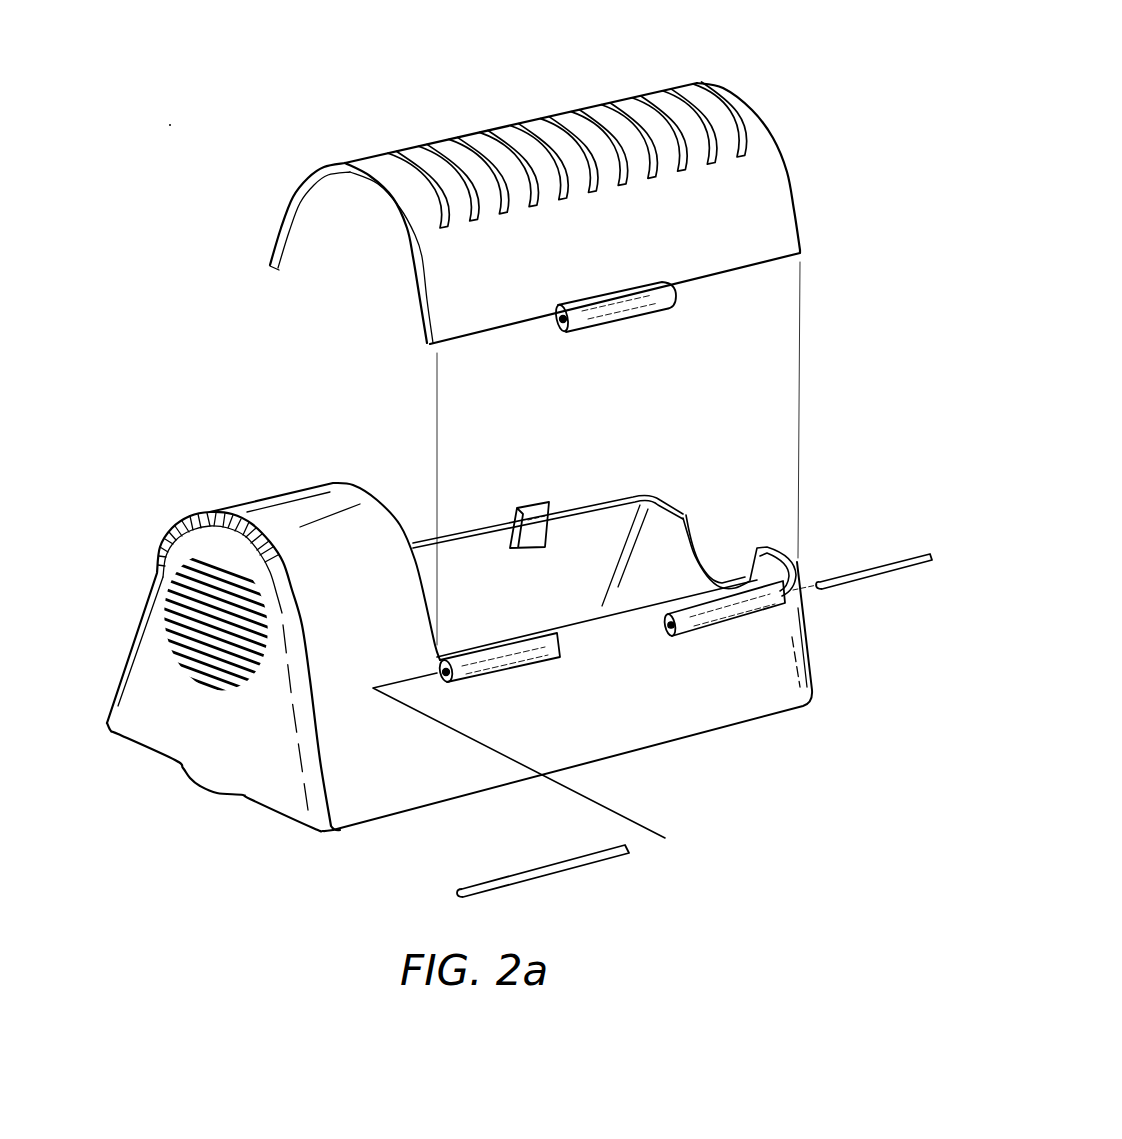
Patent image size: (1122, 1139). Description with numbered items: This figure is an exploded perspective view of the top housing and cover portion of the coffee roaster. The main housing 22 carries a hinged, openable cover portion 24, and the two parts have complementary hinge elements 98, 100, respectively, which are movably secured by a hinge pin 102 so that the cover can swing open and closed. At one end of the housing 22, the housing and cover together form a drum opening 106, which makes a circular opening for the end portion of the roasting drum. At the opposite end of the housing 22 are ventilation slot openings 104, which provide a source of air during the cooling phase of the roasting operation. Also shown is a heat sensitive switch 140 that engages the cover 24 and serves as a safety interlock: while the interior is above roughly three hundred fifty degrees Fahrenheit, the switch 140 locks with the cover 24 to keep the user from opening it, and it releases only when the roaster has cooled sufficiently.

The main housing 22 is at (757, 693).
The cover portion 24 is at (731, 101).
The hinge element 98 is at (697, 633).
The hinge element 100 is at (630, 308).
The hinge pin 102 is at (578, 867).
The ventilation slot openings 104 is at (173, 637).
The drum opening 106 is at (699, 548).
The heat sensitive switch 140 is at (548, 503).